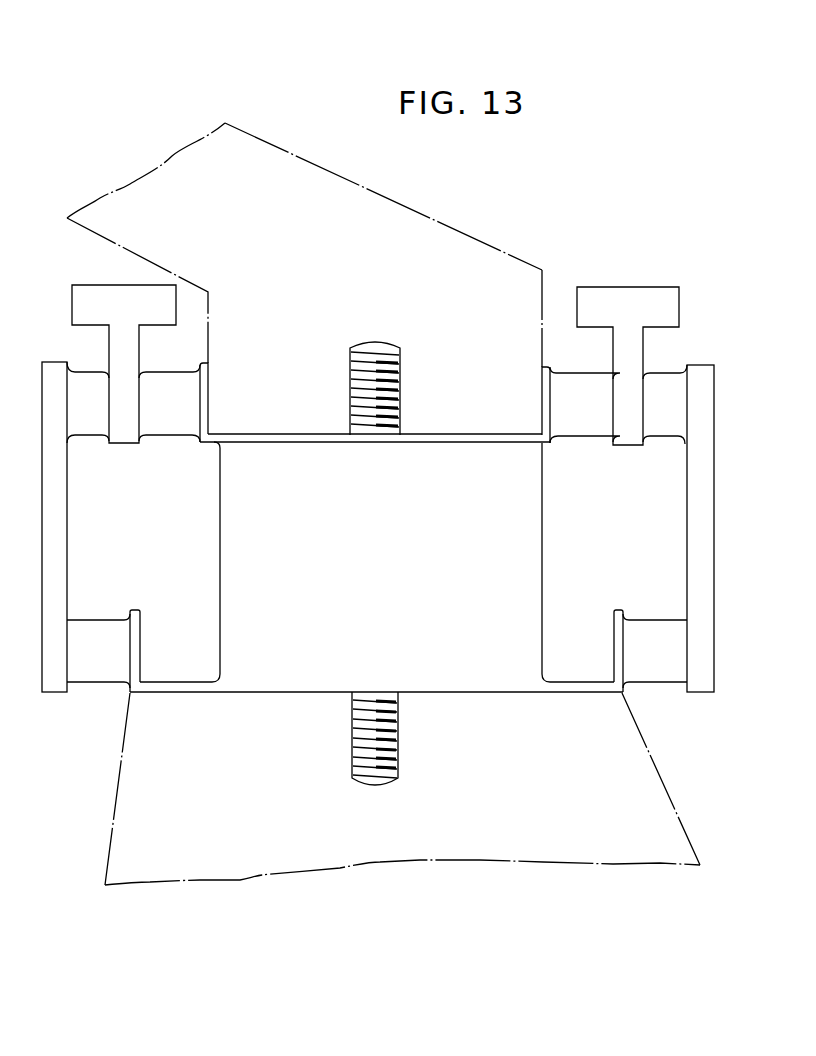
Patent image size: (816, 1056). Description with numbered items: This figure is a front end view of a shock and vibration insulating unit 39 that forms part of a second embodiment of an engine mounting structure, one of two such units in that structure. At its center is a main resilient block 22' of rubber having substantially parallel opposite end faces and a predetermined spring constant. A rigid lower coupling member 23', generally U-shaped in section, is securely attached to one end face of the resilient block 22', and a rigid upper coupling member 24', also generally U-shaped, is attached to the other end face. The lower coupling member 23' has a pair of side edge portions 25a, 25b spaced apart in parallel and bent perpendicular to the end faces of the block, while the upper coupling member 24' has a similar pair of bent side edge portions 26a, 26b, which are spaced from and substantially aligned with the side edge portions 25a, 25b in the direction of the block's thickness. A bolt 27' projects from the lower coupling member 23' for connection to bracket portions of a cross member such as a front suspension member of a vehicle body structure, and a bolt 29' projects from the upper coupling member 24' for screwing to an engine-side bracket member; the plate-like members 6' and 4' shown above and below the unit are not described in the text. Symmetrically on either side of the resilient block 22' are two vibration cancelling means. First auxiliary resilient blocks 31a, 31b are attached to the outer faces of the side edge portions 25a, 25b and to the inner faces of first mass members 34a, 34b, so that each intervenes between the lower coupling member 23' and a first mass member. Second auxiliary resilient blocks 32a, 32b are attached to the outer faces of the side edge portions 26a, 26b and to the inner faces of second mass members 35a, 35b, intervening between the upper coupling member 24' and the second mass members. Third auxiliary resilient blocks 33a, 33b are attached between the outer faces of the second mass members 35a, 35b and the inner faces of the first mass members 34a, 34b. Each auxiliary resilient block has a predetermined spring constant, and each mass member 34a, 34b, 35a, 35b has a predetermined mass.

The upper plate 6' is at (304, 243).
The shock and vibration insulating unit 39 is at (522, 230).
The lower plate 4' is at (388, 789).
The main resilient block 22' is at (378, 527).
The upper coupling member 24' is at (375, 422).
The lower coupling member 23' is at (376, 711).
The side edge portion of upper coupling member 26a is at (541, 390).
The side edge portion of upper coupling member 26b is at (211, 392).
The side edge portion of lower coupling member 25a is at (614, 650).
The side edge portion of lower coupling member 25b is at (141, 648).
The bolt 29' is at (357, 388).
The bolt 27' is at (400, 738).
The second auxiliary resilient block 32a is at (575, 437).
The second auxiliary resilient block 32b is at (172, 437).
The third auxiliary resilient block 33a is at (663, 437).
The third auxiliary resilient block 33b is at (85, 437).
The first mass member 34a is at (686, 537).
The first mass member 34b is at (68, 542).
The second mass member 35a is at (625, 448).
The second mass member 35b is at (125, 446).
The first auxiliary resilient block 31a is at (653, 620).
The first auxiliary resilient block 31b is at (102, 620).